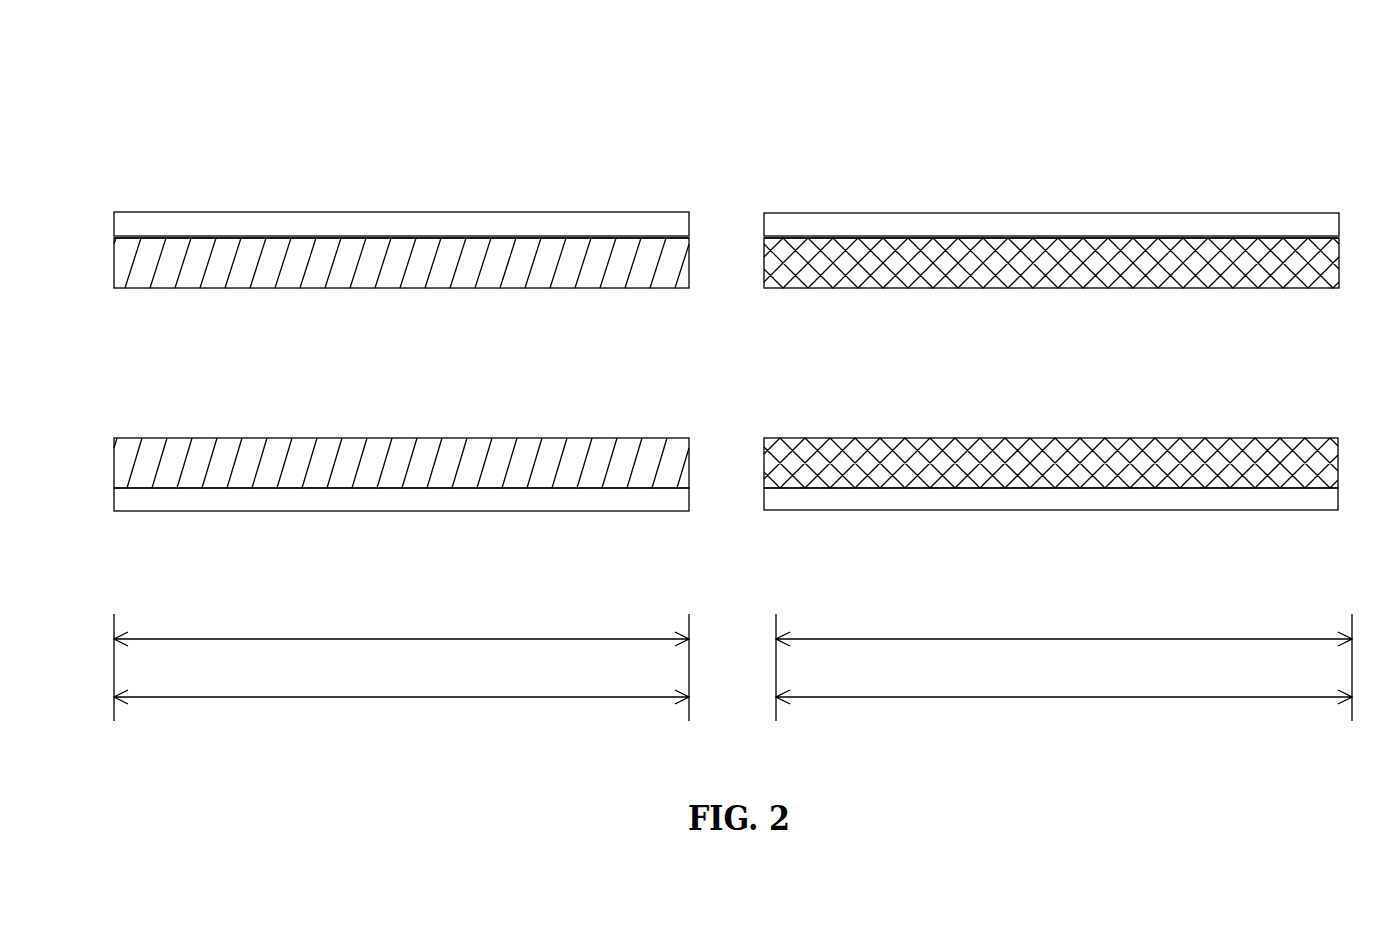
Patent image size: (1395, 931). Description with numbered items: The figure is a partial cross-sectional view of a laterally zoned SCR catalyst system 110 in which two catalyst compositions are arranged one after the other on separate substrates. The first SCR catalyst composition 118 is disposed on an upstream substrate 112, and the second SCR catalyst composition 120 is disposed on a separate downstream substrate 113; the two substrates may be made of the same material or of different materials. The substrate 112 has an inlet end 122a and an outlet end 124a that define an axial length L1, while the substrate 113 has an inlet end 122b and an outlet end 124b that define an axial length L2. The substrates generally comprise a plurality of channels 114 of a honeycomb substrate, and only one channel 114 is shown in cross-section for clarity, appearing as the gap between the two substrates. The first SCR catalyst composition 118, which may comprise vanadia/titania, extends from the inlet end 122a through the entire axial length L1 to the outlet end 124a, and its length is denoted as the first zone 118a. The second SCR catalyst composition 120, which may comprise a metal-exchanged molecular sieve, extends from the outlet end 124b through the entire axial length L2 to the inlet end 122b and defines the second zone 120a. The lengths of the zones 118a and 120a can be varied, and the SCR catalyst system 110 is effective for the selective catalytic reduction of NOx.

The SCR catalyst system 110 is at (257, 130).
The substrate 112 is at (177, 224).
The substrate 113 is at (1140, 223).
The channel 114 is at (743, 413).
The first SCR catalyst composition 118 is at (372, 248).
The second SCR catalyst composition 120 is at (1028, 265).
The first zone 118a is at (401, 673).
The second zone 120a is at (1064, 673).
The inlet end 122a is at (222, 358).
The inlet end 122b is at (838, 358).
The outlet end 124a is at (640, 313).
The outlet end 124b is at (1240, 362).